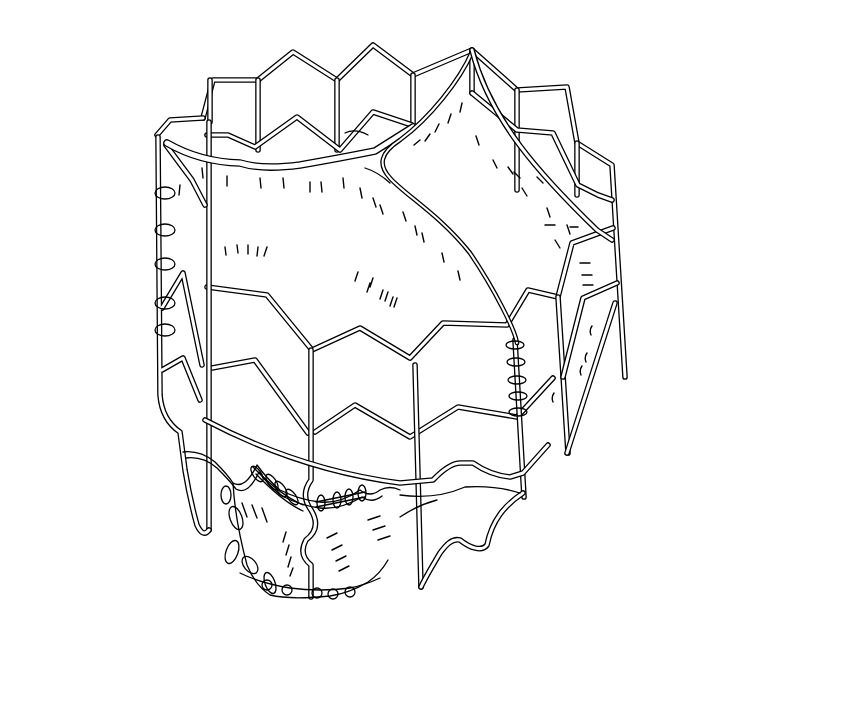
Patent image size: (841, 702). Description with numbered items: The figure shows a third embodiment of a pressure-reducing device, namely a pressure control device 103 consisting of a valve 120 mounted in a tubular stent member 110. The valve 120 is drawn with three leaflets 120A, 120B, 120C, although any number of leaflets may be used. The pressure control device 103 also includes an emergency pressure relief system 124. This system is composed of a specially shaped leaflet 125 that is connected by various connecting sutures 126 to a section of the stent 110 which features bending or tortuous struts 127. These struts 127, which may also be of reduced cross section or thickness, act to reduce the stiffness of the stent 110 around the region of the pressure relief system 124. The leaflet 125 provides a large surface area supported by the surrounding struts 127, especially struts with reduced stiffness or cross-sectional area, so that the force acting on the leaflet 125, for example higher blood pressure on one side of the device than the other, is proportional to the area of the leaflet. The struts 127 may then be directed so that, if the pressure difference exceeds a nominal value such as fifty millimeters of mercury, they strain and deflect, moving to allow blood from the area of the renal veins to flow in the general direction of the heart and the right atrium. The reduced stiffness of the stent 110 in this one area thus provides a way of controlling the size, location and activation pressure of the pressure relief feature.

The pressure control device 103 is at (665, 262).
The tubular stent member 110 is at (617, 197).
The valve 120 is at (437, 203).
The leaflet 120A is at (345, 246).
The leaflet 120B is at (527, 224).
The leaflet 120C is at (358, 133).
The emergency pressure relief system 124 is at (236, 589).
The specially shaped leaflet 125 is at (237, 497).
The connecting sutures 126 is at (160, 232).
The bending or tortuous struts 127 is at (178, 431).